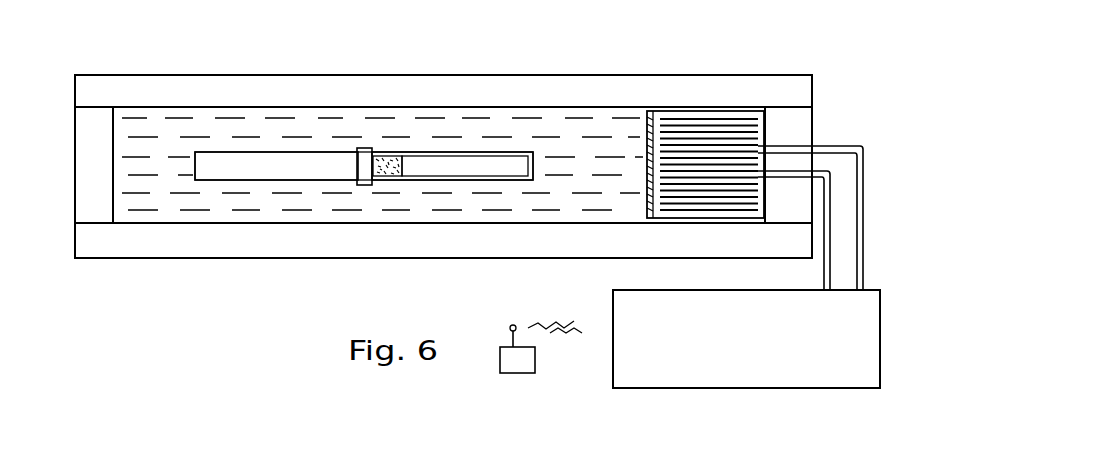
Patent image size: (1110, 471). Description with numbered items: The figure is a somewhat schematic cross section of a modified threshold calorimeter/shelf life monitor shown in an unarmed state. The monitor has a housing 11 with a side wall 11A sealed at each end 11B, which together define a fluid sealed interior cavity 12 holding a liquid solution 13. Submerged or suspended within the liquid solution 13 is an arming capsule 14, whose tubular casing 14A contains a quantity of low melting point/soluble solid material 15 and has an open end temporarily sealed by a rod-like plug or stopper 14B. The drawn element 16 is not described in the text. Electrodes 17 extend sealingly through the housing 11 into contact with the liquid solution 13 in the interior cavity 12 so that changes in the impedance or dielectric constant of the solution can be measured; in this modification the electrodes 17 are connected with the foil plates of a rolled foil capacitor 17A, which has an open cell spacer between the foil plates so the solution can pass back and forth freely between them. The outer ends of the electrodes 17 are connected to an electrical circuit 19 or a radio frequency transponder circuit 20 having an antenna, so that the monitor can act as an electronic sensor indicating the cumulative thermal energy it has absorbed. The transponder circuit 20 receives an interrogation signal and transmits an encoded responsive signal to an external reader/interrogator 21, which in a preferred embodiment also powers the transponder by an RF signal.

The housing 11 is at (150, 258).
The side wall 11A is at (215, 258).
The end 11B is at (92, 122).
The interior cavity 12 is at (173, 130).
The liquid solution 13 is at (293, 133).
The arming capsule 14 is at (437, 134).
The tubular casing 14A is at (483, 181).
The plug or stopper 14B is at (275, 180).
The low melting point/soluble solid material 15 is at (403, 168).
The block 16 is at (355, 172).
The electrodes 17 is at (848, 150).
The rolled foil capacitor 17A is at (697, 135).
The electrical circuit 19 is at (613, 308).
The radio frequency transponder circuit 20 is at (746, 339).
The reader/interrogator 21 is at (535, 360).